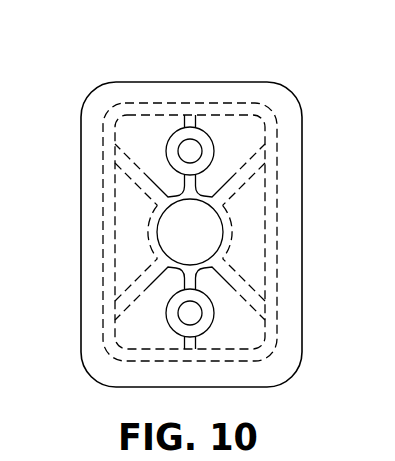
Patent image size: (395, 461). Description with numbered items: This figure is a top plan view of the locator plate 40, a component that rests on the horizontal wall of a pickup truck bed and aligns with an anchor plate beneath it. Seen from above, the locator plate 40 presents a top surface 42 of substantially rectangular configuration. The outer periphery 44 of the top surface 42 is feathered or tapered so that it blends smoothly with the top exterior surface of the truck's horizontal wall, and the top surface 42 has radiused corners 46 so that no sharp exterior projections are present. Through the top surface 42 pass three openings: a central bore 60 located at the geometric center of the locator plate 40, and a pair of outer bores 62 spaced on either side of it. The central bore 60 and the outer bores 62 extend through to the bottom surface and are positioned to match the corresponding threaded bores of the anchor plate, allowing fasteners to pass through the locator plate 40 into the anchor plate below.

The locator plate 40 is at (186, 56).
The top surface 42 is at (208, 94).
The outer periphery 44 is at (302, 229).
The radiused corners 46 is at (293, 92).
The central bore 60 is at (166, 226).
The outer bores 62 is at (197, 149).